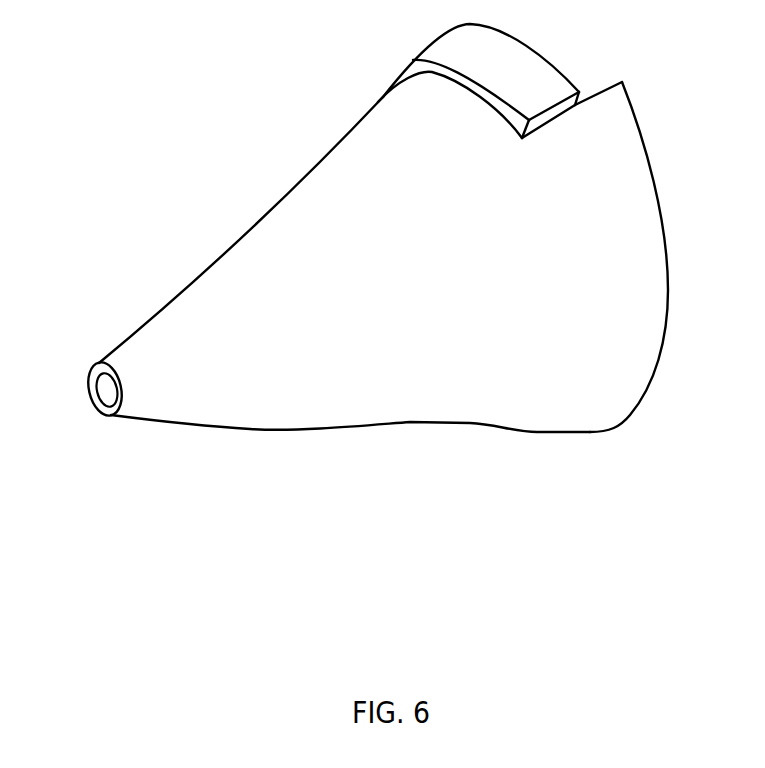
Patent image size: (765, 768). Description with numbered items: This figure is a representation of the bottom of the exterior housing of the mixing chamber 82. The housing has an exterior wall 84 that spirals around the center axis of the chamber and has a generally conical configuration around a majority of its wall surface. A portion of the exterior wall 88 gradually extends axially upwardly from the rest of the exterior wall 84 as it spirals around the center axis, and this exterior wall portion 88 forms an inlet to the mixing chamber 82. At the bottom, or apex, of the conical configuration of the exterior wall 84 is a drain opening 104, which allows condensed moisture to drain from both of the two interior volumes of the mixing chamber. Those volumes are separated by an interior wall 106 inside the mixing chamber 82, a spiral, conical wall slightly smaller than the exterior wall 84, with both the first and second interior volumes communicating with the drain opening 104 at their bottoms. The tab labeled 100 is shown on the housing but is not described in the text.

The mixing chamber 82 is at (384, 437).
The exterior wall 84 is at (485, 407).
The exterior wall portion 88 is at (607, 158).
The tab 100 is at (525, 73).
The drain opening 104 is at (91, 441).
The interior wall 106 is at (102, 365).